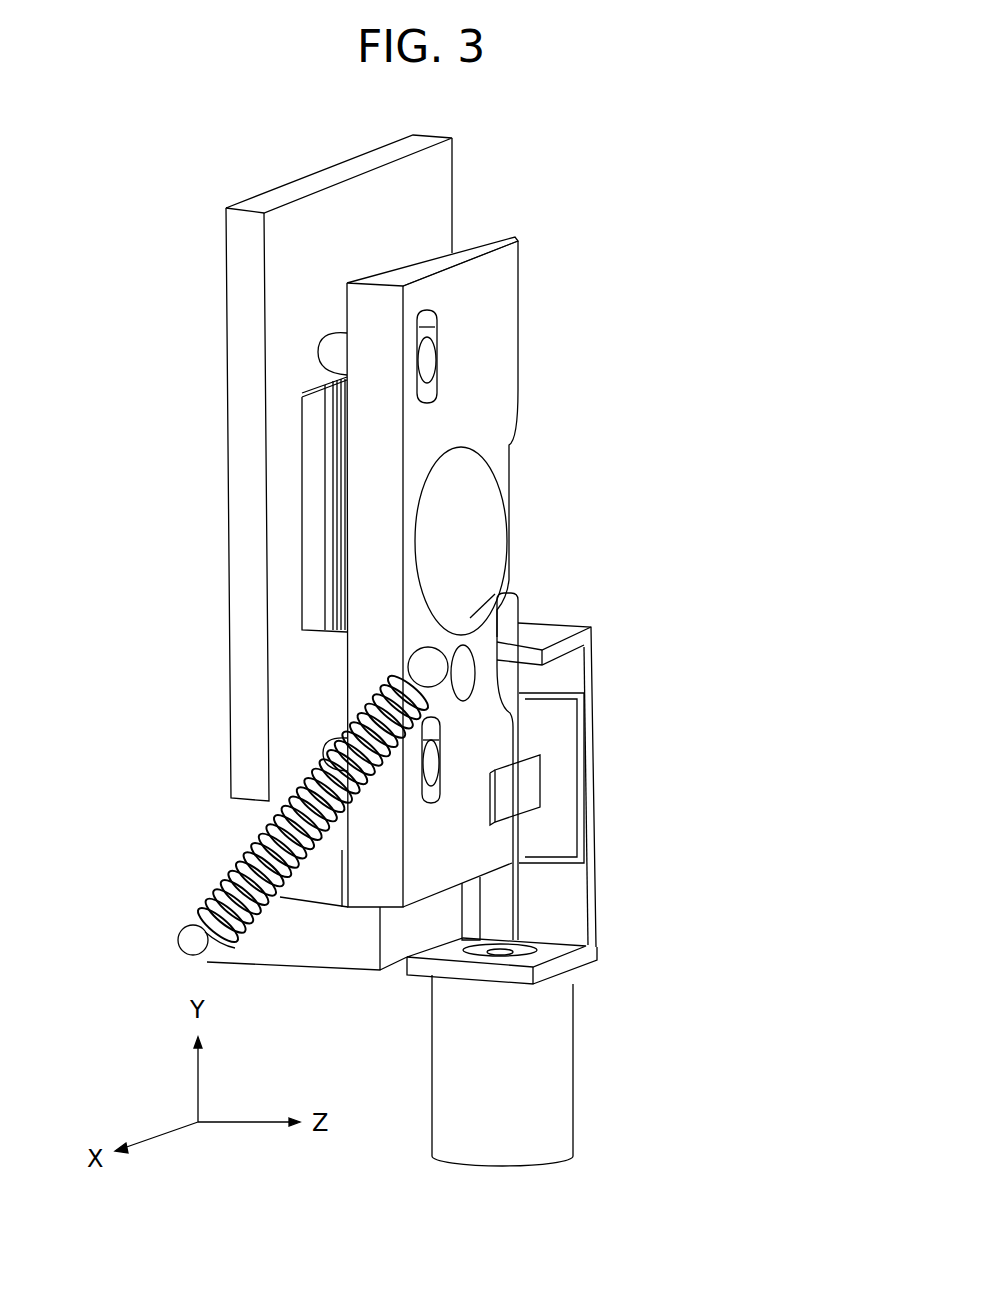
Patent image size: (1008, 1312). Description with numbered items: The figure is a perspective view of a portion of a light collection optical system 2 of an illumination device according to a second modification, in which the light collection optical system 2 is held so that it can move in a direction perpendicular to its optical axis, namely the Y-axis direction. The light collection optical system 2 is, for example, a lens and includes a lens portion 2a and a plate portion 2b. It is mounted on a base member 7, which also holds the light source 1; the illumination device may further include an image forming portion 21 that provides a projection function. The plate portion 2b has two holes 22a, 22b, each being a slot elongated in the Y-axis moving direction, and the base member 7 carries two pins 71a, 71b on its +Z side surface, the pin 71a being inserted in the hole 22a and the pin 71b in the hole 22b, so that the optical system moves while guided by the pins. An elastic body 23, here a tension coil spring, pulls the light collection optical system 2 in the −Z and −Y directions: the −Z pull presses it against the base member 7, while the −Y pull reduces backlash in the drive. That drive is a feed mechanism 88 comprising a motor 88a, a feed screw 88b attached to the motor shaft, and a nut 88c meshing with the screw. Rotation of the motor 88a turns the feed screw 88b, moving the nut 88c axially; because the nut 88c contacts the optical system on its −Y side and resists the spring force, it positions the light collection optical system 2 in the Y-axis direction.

The light source 1 is at (315, 483).
The light collection optical system 2 is at (520, 315).
The lens portion 2a is at (492, 522).
The plate portion 2b is at (500, 287).
The base member 7 is at (287, 332).
The image forming portion 21 is at (345, 585).
The hole 22a is at (435, 385).
The hole 22b is at (430, 792).
The elastic body 23 is at (240, 868).
The pin 71a is at (428, 360).
The pin 71b is at (430, 760).
The feed mechanism 88 is at (628, 894).
The motor 88a is at (595, 1070).
The feed screw 88b is at (507, 907).
The nut 88c is at (527, 787).